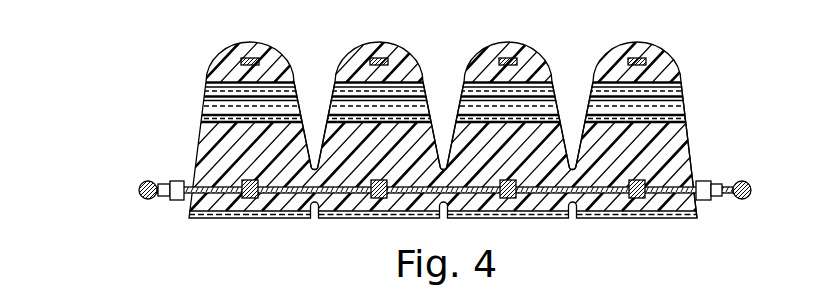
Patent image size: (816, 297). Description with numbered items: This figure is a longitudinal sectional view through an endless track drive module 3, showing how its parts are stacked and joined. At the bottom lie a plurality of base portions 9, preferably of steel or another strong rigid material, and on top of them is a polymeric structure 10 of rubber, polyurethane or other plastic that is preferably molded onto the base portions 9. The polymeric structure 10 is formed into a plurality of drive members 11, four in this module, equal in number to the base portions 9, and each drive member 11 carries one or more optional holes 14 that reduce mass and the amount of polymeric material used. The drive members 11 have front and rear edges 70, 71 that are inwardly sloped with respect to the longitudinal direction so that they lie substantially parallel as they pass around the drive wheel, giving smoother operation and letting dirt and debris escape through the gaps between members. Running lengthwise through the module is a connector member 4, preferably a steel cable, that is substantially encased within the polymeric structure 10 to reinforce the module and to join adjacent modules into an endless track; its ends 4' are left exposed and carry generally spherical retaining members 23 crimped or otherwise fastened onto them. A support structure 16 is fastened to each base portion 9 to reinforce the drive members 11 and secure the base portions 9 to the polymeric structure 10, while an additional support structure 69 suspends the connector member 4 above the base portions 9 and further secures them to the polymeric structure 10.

The endless track drive module 3 is at (695, 66).
The connector member 4 is at (439, 215).
The end of connector member 4' is at (438, 197).
The base portion 9 is at (272, 219).
The polymeric structure 10 is at (195, 150).
The drive member 11 is at (252, 46).
The hole 14 is at (212, 107).
The support structure 16 is at (247, 58).
The retaining member 23 is at (143, 180).
The additional support structure 69 is at (388, 196).
The front edge of drive member 70 is at (578, 137).
The rear edge of drive member 71 is at (692, 138).